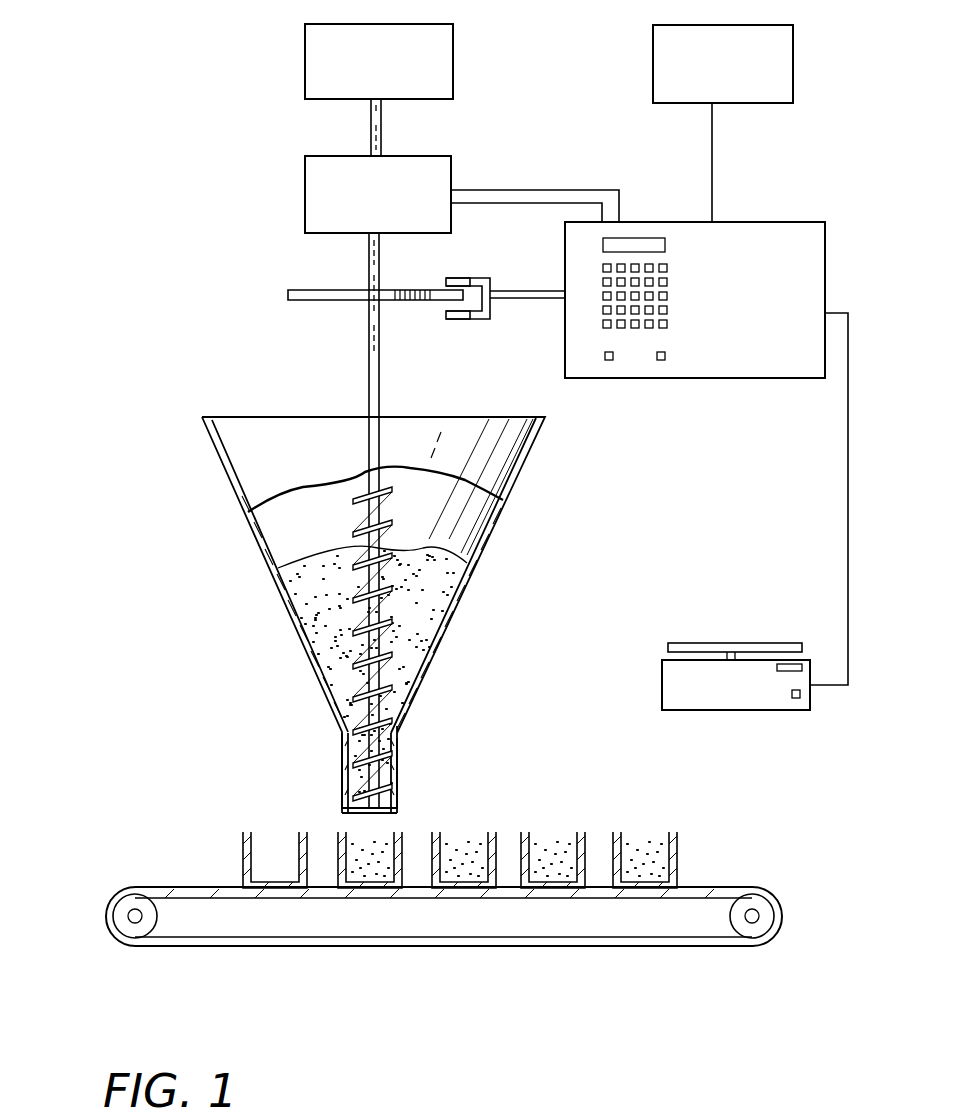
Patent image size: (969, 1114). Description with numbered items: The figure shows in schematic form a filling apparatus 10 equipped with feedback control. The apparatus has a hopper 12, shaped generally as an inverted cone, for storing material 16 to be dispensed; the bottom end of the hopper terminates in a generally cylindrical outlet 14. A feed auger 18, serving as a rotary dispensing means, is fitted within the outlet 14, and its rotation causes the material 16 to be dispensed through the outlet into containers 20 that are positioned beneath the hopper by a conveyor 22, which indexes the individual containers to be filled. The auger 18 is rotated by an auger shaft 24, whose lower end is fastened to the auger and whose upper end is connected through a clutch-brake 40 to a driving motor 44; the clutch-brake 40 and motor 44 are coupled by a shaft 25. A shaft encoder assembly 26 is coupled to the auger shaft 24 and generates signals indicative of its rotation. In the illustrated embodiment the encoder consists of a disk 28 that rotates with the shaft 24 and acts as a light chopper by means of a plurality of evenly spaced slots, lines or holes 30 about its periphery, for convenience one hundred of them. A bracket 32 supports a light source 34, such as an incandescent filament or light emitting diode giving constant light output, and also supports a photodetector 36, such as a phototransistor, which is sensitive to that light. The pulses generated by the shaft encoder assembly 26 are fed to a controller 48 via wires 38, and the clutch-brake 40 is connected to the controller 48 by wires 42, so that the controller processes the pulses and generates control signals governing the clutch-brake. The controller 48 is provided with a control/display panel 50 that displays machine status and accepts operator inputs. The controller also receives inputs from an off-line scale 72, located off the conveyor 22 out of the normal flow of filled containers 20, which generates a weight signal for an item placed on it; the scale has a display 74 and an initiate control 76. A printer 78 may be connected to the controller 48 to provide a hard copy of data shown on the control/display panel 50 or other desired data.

The filling apparatus 10 is at (202, 121).
The hopper 12 is at (500, 477).
The outlet 14 is at (397, 812).
The material 16 is at (433, 600).
The feed auger 18 is at (383, 682).
The containers 20 is at (322, 830).
The conveyor 22 is at (722, 888).
The auger shaft 24 is at (370, 258).
The shaft 25 is at (380, 118).
The shaft encoder assembly 26 is at (275, 290).
The disk 28 is at (310, 300).
The slots, lines or holes 30 is at (406, 290).
The bracket 32 is at (490, 308).
The light source 34 is at (462, 282).
The photodetector 36 is at (452, 315).
The wires 38 is at (540, 285).
The clutch-brake 40 is at (305, 190).
The wires 42 is at (556, 190).
The driving motor 44 is at (455, 52).
The controller 48 is at (706, 394).
The control/display panel 50 is at (632, 358).
The off-line scale 72 is at (775, 700).
The display 74 is at (800, 660).
The initiate control 76 is at (800, 694).
The printer 78 is at (790, 82).